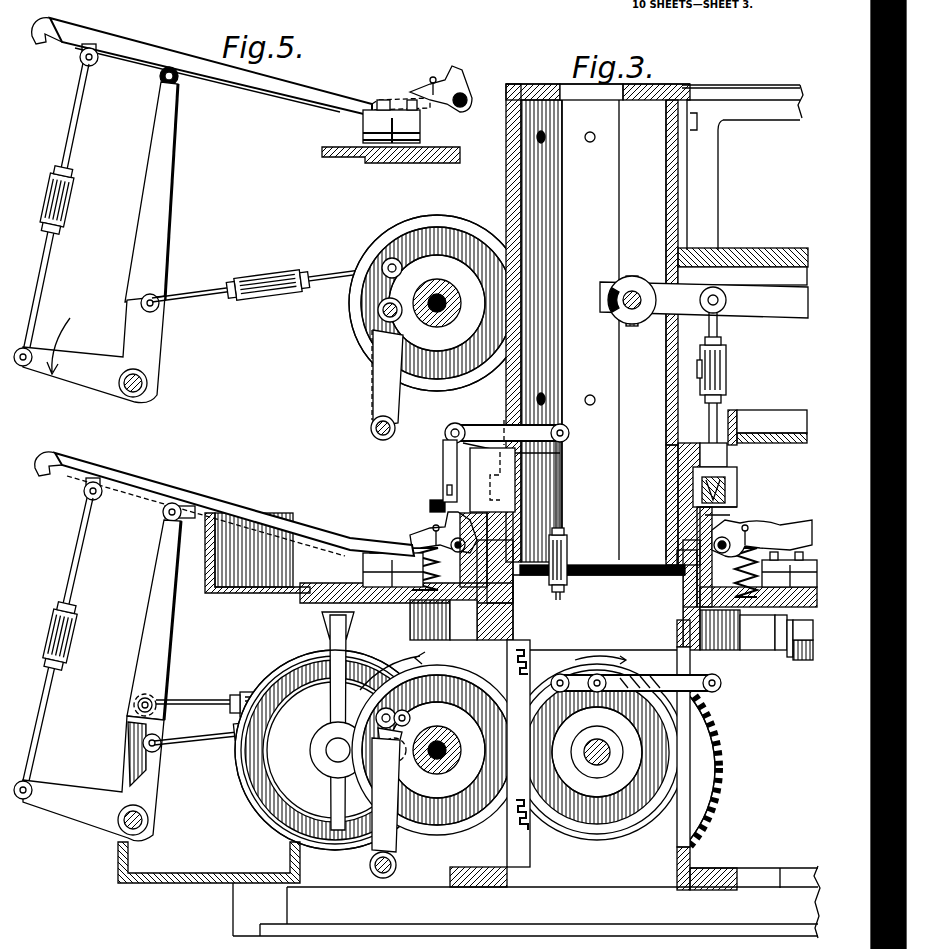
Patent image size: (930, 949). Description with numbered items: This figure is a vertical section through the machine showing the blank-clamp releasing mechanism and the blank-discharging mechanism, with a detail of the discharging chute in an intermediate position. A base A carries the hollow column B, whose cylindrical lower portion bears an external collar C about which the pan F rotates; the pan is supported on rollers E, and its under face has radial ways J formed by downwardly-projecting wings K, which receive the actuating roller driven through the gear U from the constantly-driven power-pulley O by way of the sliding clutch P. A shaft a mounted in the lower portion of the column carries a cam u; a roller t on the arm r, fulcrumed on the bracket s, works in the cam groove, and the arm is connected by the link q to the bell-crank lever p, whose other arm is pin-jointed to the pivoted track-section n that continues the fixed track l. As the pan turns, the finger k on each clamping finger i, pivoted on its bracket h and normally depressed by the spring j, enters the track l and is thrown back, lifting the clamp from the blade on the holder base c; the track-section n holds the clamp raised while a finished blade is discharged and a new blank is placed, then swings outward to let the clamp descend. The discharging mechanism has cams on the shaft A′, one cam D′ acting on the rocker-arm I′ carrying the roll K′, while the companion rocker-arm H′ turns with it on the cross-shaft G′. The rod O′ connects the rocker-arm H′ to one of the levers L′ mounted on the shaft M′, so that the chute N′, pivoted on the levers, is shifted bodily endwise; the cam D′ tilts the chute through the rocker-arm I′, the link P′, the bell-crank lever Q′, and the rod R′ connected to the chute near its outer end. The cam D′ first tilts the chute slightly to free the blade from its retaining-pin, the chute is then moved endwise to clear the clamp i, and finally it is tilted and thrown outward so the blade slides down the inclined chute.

In FIG. 5, the releasing and delivery chute N′ is at (262, 78).
In FIG. 3, the releasing and delivery chute N′ is at (240, 526).
In FIG. 5, the arms or levers L′ is at (160, 170).
In FIG. 3, the arms or levers L′ is at (155, 660).
In FIG. 5, the rod R′ is at (47, 265).
In FIG. 3, the rod R′ is at (47, 694).
In FIG. 5, the bell-crank lever Q′ is at (142, 343).
In FIG. 3, the bell-crank lever Q′ is at (78, 808).
In FIG. 5, the shaft M′ is at (147, 386).
In FIG. 3, the shaft M′ is at (150, 820).
In FIG. 5, the link P′ is at (228, 312).
In FIG. 3, the link P′ is at (210, 745).
In FIG. 5, the roll K′ is at (380, 306).
In FIG. 3, the roll K′ is at (392, 764).
In FIG. 5, the cam D′ is at (352, 336).
In FIG. 3, the cam D′ is at (437, 743).
In FIG. 5, the rocker-arm I′ is at (378, 388).
In FIG. 3, the rocker-arm I′ is at (372, 760).
In FIG. 5, the shaft A′ is at (452, 300).
In FIG. 3, the shaft A′ is at (452, 752).
In FIG. 5, the lug or finger k is at (441, 76).
In FIG. 3, the lug or finger k is at (765, 528).
In FIG. 5, the clamp or clamping finger i is at (456, 92).
In FIG. 3, the clamp or clamping finger i is at (755, 538).
In FIG. 5, the base c is at (458, 136).
In FIG. 3, the base c is at (340, 575).
In FIG. 3, the hollow column B is at (562, 238).
In FIG. 3, the spring j is at (584, 557).
In FIG. 3, the bracket h is at (688, 580).
In FIG. 3, the external collar C is at (508, 592).
In FIG. 3, the radial ways J is at (443, 620).
In FIG. 3, the wings K is at (392, 633).
In FIG. 3, the roller E is at (803, 667).
In FIG. 3, the pan F is at (300, 610).
In FIG. 3, the adjustable link or rod O′ is at (232, 690).
In FIG. 3, the sliding clutch P is at (318, 772).
In FIG. 3, the belt or power-pulley O is at (296, 678).
In FIG. 3, the rocker-arm H′ is at (370, 746).
In FIG. 3, the cross-shaft G′ is at (383, 880).
In FIG. 3, the gear U is at (700, 742).
In FIG. 3, the cam u is at (612, 800).
In FIG. 3, the shaft a is at (588, 750).
In FIG. 3, the bracket s is at (762, 678).
In FIG. 3, the arm or lever r is at (640, 676).
In FIG. 3, the roller t is at (597, 674).
In FIG. 3, the base A is at (508, 912).
In FIG. 3, the bell-crank lever p is at (486, 428).
In FIG. 3, the track-section n is at (447, 500).
In FIG. 3, the guideway or track l is at (492, 466).
In FIG. 3, the link or connecting-rod q is at (566, 524).